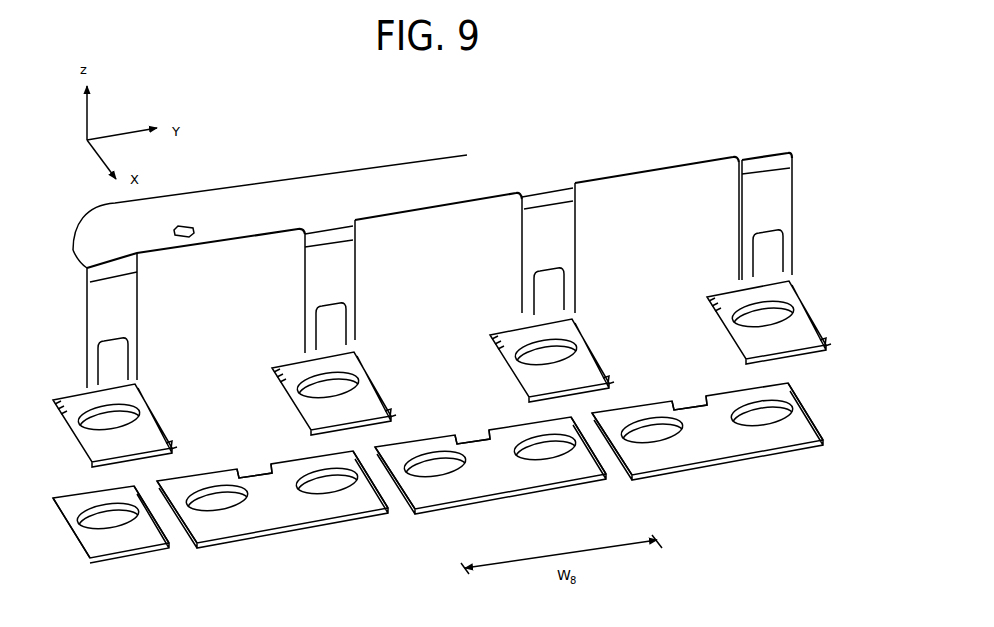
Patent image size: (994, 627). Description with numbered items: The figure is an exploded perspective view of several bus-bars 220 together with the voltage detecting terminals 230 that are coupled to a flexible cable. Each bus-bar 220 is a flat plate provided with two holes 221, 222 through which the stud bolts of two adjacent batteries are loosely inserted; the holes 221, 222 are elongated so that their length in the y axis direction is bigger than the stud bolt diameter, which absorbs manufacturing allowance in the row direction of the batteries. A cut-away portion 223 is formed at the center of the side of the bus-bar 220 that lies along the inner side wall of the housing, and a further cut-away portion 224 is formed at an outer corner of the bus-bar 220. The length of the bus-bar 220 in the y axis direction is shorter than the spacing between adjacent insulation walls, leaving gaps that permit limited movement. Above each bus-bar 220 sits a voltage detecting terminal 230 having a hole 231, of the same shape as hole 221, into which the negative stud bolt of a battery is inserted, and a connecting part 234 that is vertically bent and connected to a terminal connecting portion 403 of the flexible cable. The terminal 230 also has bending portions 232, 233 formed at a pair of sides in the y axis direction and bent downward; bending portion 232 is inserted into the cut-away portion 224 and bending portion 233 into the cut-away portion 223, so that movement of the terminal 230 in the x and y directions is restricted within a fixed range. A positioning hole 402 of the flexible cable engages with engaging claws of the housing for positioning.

The positioning hole 402 is at (190, 230).
The terminal connecting portion 403 is at (137, 310).
The connecting part 234 is at (128, 362).
The voltage detecting terminal 230 is at (377, 377).
The hole 231 is at (312, 388).
The bending portion 232 is at (170, 448).
The bending portion 233 is at (55, 400).
The bus-bar 220 is at (113, 560).
The hole 221 is at (333, 487).
The hole 222 is at (235, 500).
The cut-away portion 223 is at (253, 467).
The cut-away portion 224 is at (50, 497).